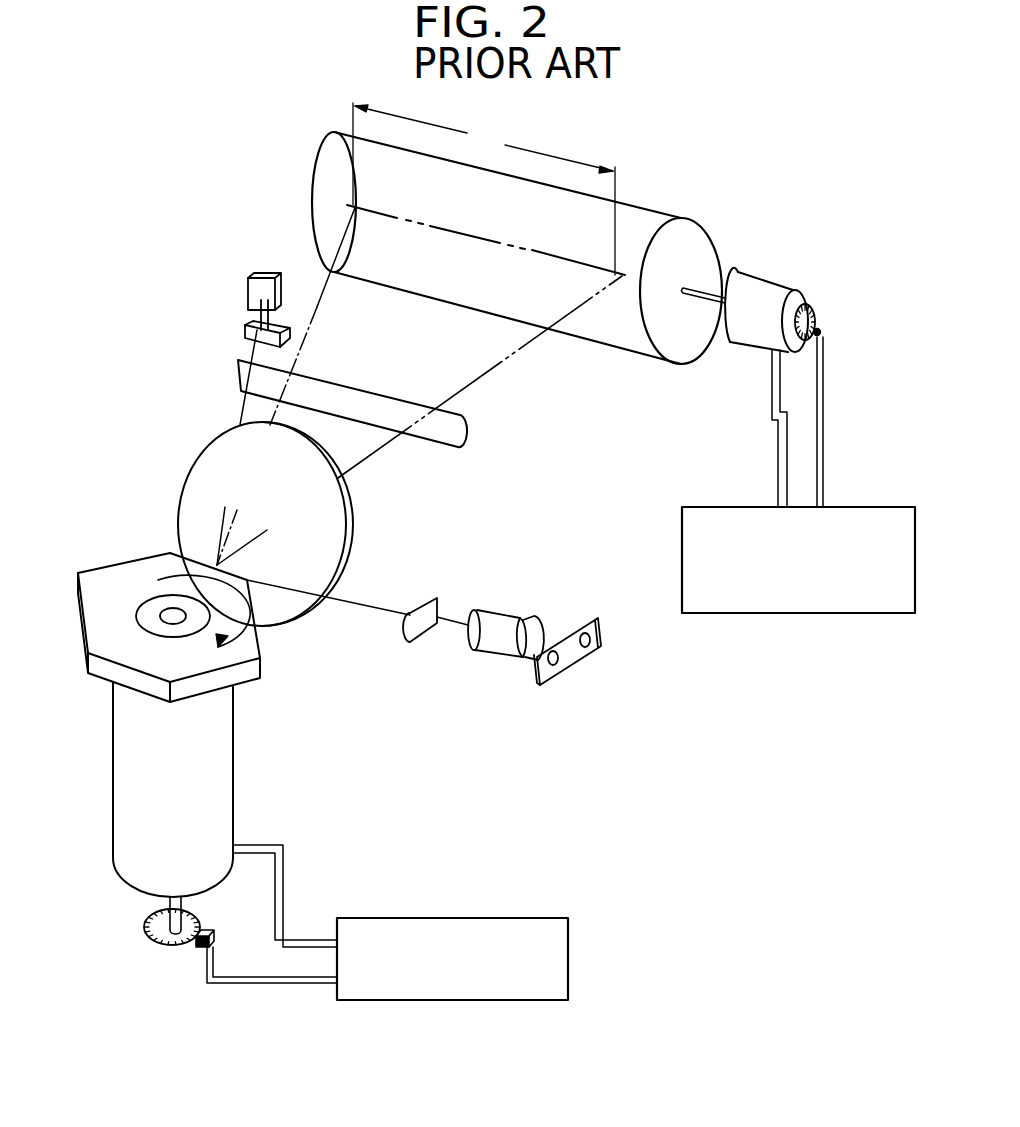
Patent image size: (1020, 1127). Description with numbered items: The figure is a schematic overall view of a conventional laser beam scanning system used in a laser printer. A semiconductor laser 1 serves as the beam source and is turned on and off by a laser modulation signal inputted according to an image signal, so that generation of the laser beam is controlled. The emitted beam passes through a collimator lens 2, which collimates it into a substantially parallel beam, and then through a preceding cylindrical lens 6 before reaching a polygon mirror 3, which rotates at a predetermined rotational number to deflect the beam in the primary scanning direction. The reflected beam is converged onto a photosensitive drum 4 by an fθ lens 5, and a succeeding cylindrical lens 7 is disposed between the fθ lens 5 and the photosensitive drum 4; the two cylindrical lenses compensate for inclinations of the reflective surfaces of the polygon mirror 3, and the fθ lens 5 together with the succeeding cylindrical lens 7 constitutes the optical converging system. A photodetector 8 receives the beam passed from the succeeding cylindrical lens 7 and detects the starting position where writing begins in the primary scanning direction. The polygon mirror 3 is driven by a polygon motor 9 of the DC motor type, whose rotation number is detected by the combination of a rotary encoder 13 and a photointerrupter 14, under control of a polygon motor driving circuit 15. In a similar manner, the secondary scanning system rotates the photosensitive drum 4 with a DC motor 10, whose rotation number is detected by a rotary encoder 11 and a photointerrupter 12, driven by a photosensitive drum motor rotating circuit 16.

The semiconductor laser 1 is at (545, 625).
The collimator lens 2 is at (477, 612).
The polygon mirror 3 is at (230, 660).
The photosensitive drum 4 is at (328, 162).
The fθ lens 5 is at (348, 514).
The preceding cylindrical lens 6 is at (415, 608).
The succeeding cylindrical lens 7 is at (420, 420).
The photodetector 8 is at (248, 287).
The polygon motor 9 is at (227, 760).
The DC motor 10 is at (760, 293).
The rotary encoder 11 is at (812, 305).
The photointerrupter 12 is at (821, 332).
The rotary encoder 13 is at (152, 935).
The photointerrupter 14 is at (198, 948).
The polygon motor driving circuit 15 is at (520, 918).
The photosensitive drum motor rotating circuit 16 is at (867, 507).